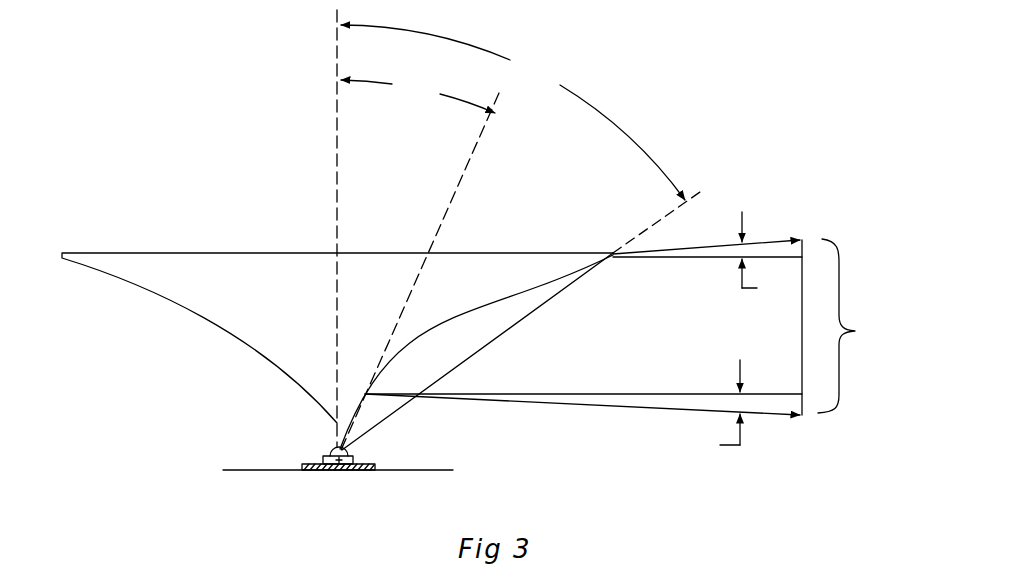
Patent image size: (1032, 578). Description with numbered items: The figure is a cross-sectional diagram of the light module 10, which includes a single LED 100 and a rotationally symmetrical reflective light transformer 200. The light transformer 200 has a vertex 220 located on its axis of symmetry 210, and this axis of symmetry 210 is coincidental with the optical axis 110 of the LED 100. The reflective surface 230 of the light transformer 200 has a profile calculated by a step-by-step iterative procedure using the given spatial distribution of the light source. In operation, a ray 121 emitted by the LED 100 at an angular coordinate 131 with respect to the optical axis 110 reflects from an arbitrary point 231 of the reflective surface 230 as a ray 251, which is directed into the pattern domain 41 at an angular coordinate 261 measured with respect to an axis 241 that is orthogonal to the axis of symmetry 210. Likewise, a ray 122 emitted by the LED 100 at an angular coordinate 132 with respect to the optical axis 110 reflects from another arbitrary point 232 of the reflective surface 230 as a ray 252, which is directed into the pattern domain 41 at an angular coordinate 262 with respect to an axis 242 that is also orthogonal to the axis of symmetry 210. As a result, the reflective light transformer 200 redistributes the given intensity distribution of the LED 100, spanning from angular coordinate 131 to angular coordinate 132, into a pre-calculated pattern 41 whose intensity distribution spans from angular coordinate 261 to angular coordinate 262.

The light module 10 is at (183, 204).
The light source (LED) 100 is at (311, 452).
The optical axis 110 is at (334, 433).
The ray 121 is at (363, 417).
The ray 122 is at (467, 368).
The angular coordinate 131 is at (418, 87).
The angular coordinate 132 is at (535, 72).
The reflective light transformer 200 is at (337, 338).
The axis of symmetry 210 is at (335, 149).
The vertex 220 is at (336, 422).
The reflective surface 230 is at (499, 308).
The arbitrary point 231 is at (361, 390).
The arbitrary point 232 is at (612, 261).
The axis 241 is at (632, 392).
The axis 242 is at (717, 260).
The ray 251 is at (623, 411).
The ray 252 is at (685, 246).
The angular coordinate 261 is at (737, 403).
The angular coordinate 262 is at (746, 248).
The pattern domain 41 is at (862, 326).